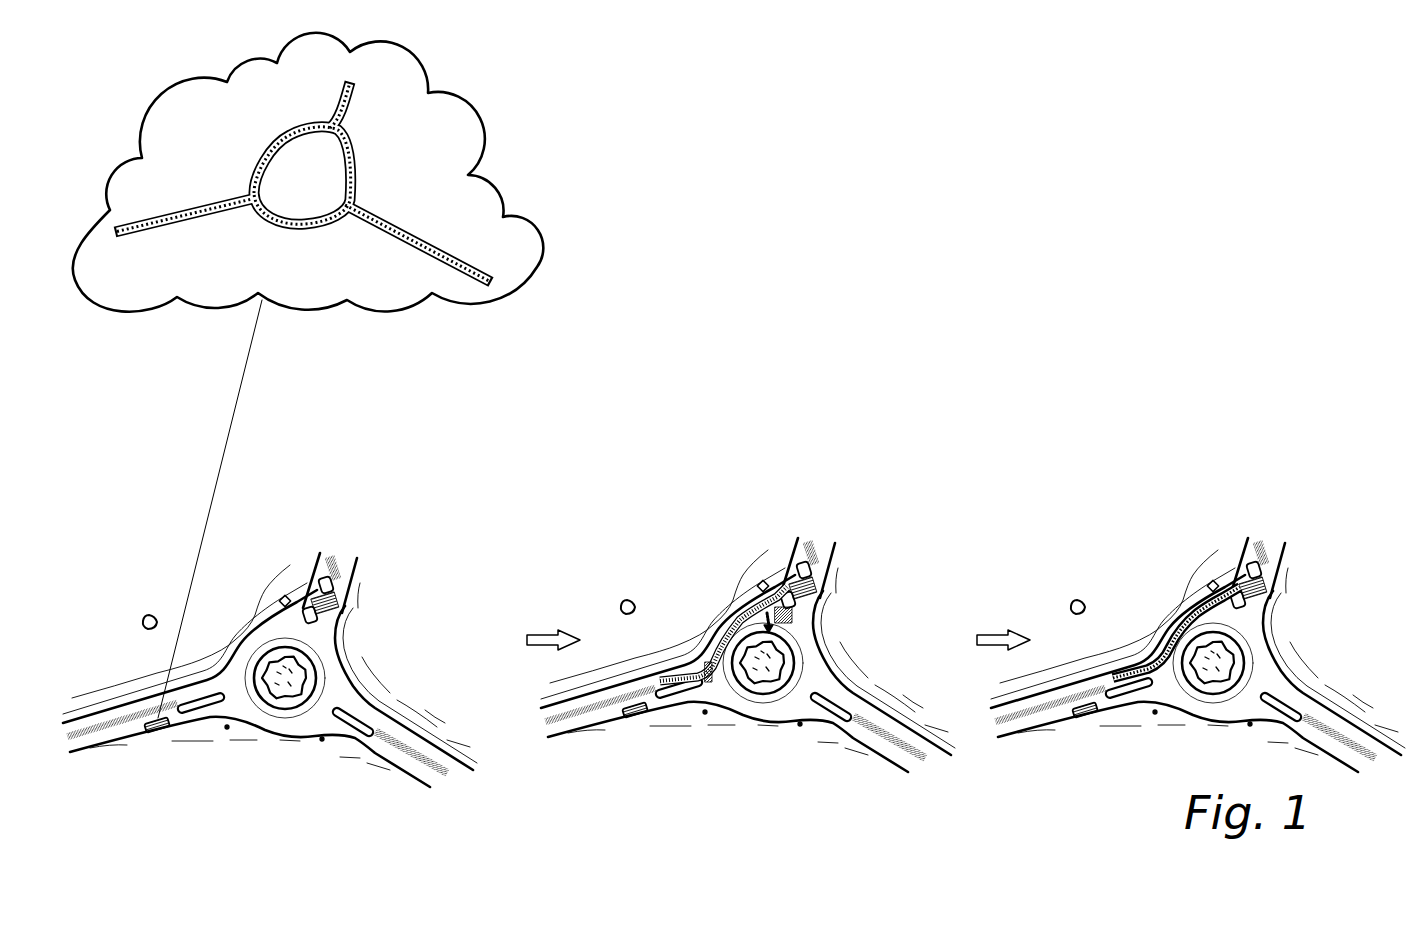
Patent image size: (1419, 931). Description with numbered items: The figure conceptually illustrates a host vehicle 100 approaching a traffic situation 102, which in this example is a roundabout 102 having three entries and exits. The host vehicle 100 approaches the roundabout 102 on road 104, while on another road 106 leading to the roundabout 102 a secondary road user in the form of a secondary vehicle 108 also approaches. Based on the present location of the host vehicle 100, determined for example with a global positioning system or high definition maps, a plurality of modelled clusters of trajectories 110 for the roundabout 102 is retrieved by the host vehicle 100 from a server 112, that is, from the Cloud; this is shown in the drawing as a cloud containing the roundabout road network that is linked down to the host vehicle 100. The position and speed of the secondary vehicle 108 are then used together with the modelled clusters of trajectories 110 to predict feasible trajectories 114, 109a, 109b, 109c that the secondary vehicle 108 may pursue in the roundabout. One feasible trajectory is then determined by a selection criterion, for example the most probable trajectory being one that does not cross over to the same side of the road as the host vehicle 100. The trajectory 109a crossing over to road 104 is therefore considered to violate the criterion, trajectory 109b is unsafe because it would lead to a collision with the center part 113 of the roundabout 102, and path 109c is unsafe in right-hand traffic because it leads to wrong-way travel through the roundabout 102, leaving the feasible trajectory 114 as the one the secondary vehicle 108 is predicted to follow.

The host vehicle 100 is at (157, 731).
The roundabout 102 is at (277, 727).
The road 104 is at (128, 728).
The another road 106 is at (340, 587).
The secondary vehicle 108 is at (300, 588).
The feasible trajectory 109a is at (707, 682).
The trajectory 109b is at (767, 632).
The path 109c is at (787, 622).
The modelled clusters of trajectories 110 is at (380, 157).
The server 112 is at (537, 268).
The center part 113 is at (782, 661).
The feasible trajectory 114 is at (737, 613).